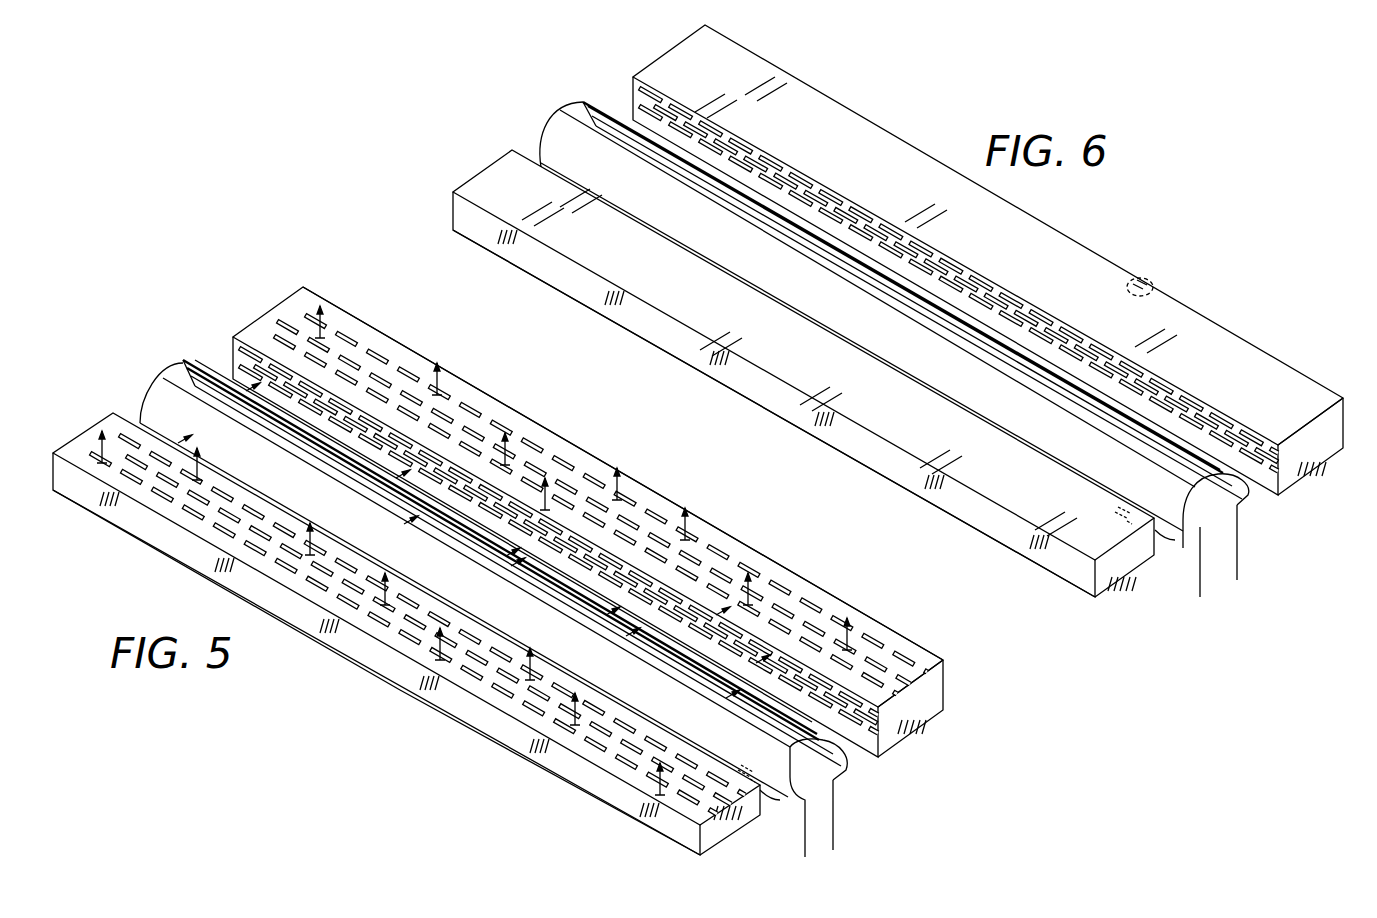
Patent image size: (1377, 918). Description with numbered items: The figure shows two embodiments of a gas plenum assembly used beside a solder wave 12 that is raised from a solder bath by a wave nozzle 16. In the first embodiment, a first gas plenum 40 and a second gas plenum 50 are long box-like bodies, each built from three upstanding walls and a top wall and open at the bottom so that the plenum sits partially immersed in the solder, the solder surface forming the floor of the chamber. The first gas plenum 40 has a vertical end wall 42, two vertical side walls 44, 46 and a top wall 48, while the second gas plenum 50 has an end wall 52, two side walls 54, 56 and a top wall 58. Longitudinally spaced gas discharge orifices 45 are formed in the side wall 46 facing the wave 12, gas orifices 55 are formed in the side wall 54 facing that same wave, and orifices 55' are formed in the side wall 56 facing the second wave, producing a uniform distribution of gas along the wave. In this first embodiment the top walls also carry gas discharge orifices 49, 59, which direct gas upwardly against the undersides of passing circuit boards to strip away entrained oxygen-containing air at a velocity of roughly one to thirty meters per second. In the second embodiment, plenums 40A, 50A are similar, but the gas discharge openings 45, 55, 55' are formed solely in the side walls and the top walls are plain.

In FIG. 5, the solder wave 12 is at (846, 772).
In FIG. 6, the solder wave 12 is at (1250, 492).
In FIG. 5, the wave nozzle 16 is at (835, 828).
In FIG. 6, the wave nozzle 16 is at (1237, 555).
In FIG. 5, the first gas plenum 40 is at (428, 703).
In FIG. 6, the first gas plenum 40A is at (767, 390).
In FIG. 5, the vertical end wall 42 is at (702, 828).
In FIG. 6, the vertical end wall 42 is at (1112, 575).
In FIG. 5, the vertical side wall 44 is at (375, 666).
In FIG. 6, the vertical side wall 44 is at (1037, 548).
In FIG. 5, the gas discharge orifices 45 is at (738, 768).
In FIG. 6, the gas discharge orifices 45 is at (1118, 520).
In FIG. 5, the vertical side wall 46 is at (768, 800).
In FIG. 6, the vertical side wall 46 is at (1160, 548).
In FIG. 5, the top wall 48 is at (500, 708).
In FIG. 6, the top wall 48 is at (1008, 490).
In FIG. 5, the gas discharge orifices 49 is at (590, 750).
In FIG. 5, the second gas plenum 50 is at (773, 553).
In FIG. 6, the second gas plenum 50A is at (1235, 322).
In FIG. 5, the end wall 52 is at (942, 700).
In FIG. 6, the end wall 52 is at (1325, 455).
In FIG. 5, the side wall 54 is at (870, 745).
In FIG. 6, the side wall 54 is at (1262, 447).
In FIG. 5, the gas orifices 55 is at (508, 564).
In FIG. 6, the gas orifices 55 is at (958, 279).
In FIG. 6, the gas orifices 55' is at (1148, 249).
In FIG. 5, the side wall 56 is at (946, 664).
In FIG. 6, the side wall 56 is at (1345, 410).
In FIG. 5, the top wall 58 is at (837, 580).
In FIG. 5, the gas discharge orifices 59 is at (720, 550).